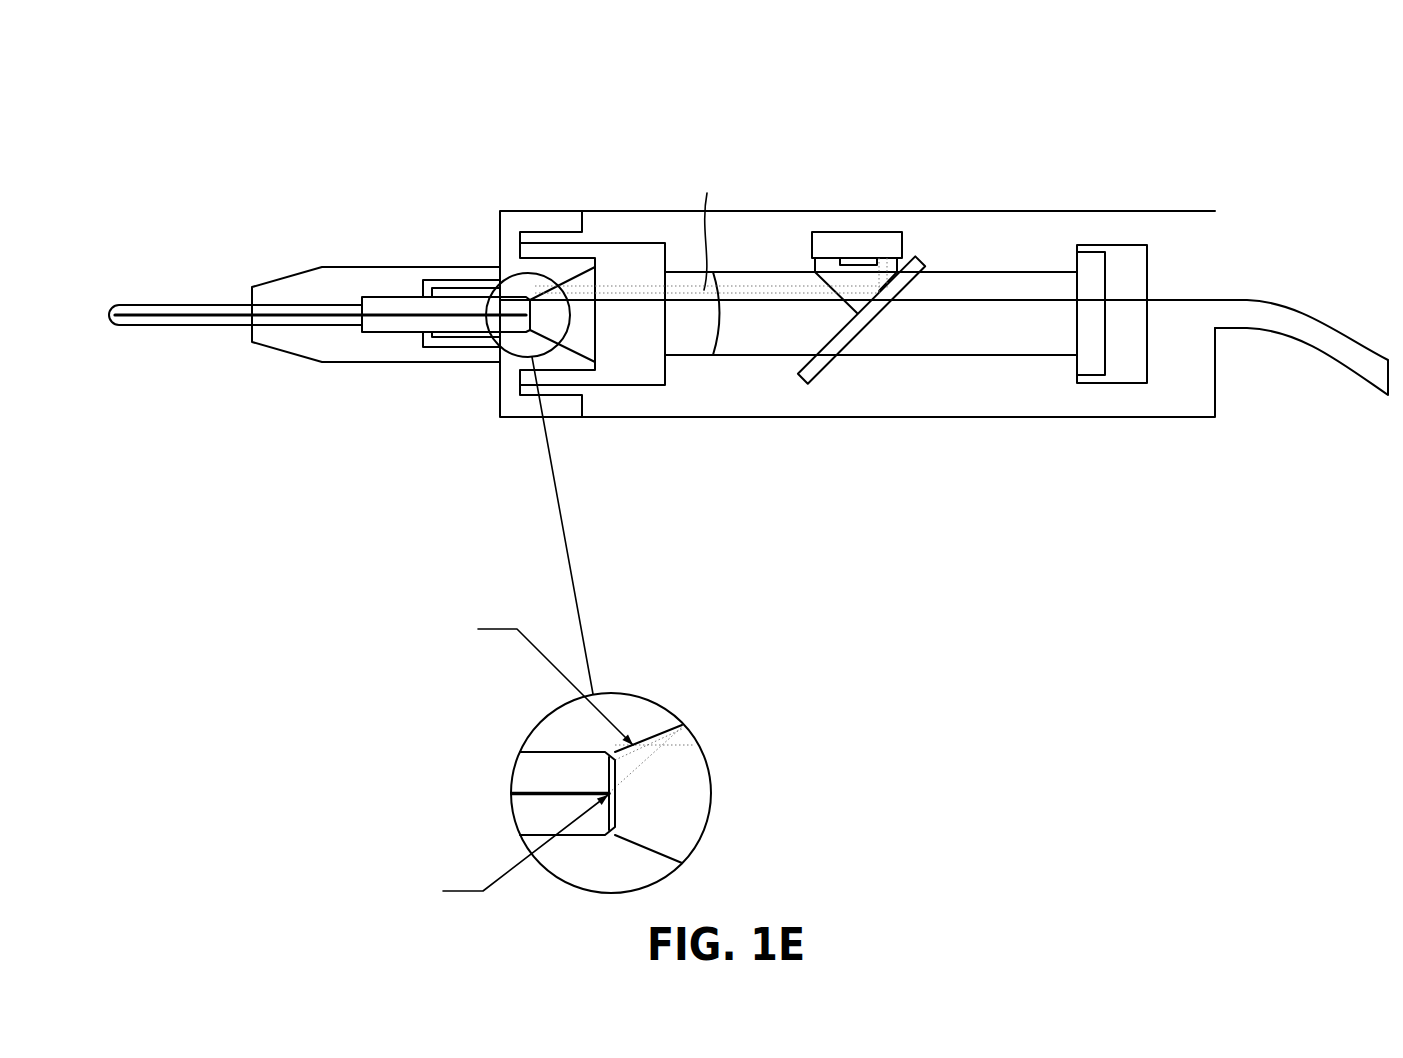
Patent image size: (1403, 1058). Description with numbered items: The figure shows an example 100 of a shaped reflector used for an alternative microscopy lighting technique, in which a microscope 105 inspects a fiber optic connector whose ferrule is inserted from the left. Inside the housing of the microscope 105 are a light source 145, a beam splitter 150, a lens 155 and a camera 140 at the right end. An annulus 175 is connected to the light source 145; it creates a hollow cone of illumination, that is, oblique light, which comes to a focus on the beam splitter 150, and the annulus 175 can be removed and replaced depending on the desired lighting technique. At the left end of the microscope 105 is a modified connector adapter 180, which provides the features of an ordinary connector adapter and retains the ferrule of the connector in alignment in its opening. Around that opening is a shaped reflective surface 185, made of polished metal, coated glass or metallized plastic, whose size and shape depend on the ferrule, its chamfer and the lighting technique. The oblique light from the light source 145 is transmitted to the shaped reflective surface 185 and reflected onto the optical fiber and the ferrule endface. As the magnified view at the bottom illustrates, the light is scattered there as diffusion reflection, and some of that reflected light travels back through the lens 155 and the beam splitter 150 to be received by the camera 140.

The example 100 is at (212, 66).
The microscope 105 is at (528, 208).
The camera 140 is at (1088, 352).
The light source 145 is at (855, 242).
The beam splitter 150 is at (825, 353).
The lens 155 is at (684, 342).
The annulus 175 is at (852, 262).
The modified connector adapter 180 is at (522, 406).
The shaped reflective surface 185 is at (622, 752).